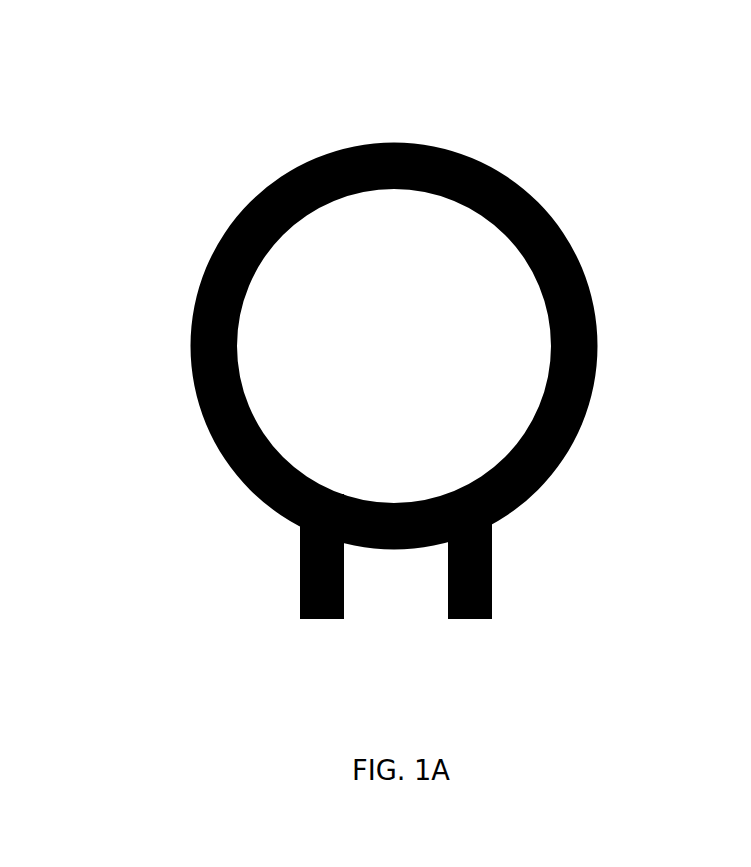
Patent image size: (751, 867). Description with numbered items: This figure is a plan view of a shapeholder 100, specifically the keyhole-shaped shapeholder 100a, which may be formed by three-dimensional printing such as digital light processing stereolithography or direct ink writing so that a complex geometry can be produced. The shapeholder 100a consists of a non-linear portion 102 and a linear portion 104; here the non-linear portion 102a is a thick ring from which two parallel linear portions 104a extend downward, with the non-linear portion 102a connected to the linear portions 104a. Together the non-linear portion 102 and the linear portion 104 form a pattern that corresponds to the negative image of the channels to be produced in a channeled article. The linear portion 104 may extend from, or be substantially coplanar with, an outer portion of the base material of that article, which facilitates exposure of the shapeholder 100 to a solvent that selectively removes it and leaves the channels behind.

The shapeholder 100 is at (452, 334).
The shapeholder 100a is at (292, 146).
The non-linear portion 102 is at (469, 345).
The non-linear portion 102a is at (577, 257).
The linear portion 104 is at (404, 556).
The linear portion 104a is at (300, 571).